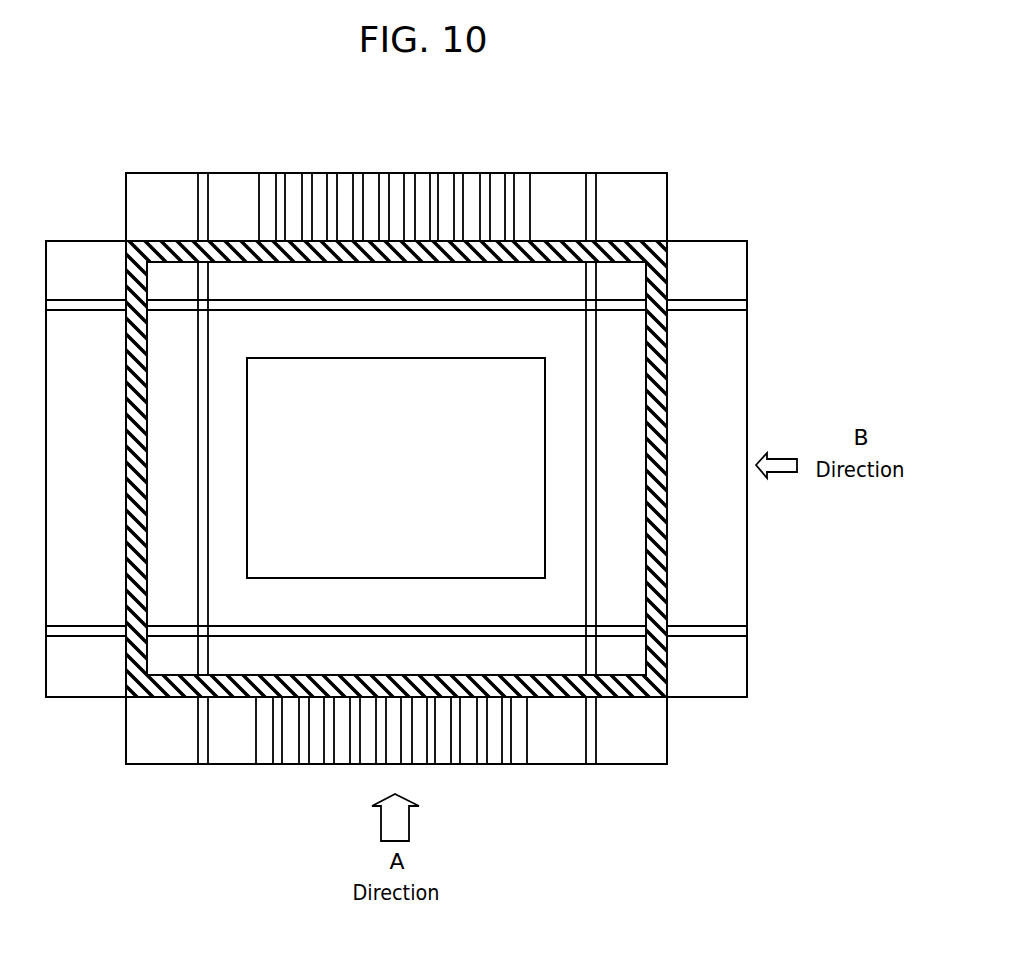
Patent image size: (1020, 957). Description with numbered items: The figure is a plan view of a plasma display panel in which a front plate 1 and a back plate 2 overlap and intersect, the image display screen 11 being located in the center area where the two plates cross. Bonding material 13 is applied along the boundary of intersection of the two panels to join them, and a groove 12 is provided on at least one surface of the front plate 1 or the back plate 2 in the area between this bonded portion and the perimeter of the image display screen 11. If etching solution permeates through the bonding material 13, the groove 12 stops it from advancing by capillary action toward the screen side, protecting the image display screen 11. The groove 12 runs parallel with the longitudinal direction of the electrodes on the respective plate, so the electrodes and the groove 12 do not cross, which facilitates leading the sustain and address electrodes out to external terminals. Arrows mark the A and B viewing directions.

The front plate 1 is at (748, 580).
The back plate 2 is at (669, 170).
The image display screen 11 is at (422, 357).
The groove 12 is at (750, 307).
The bonding material 13 is at (668, 703).